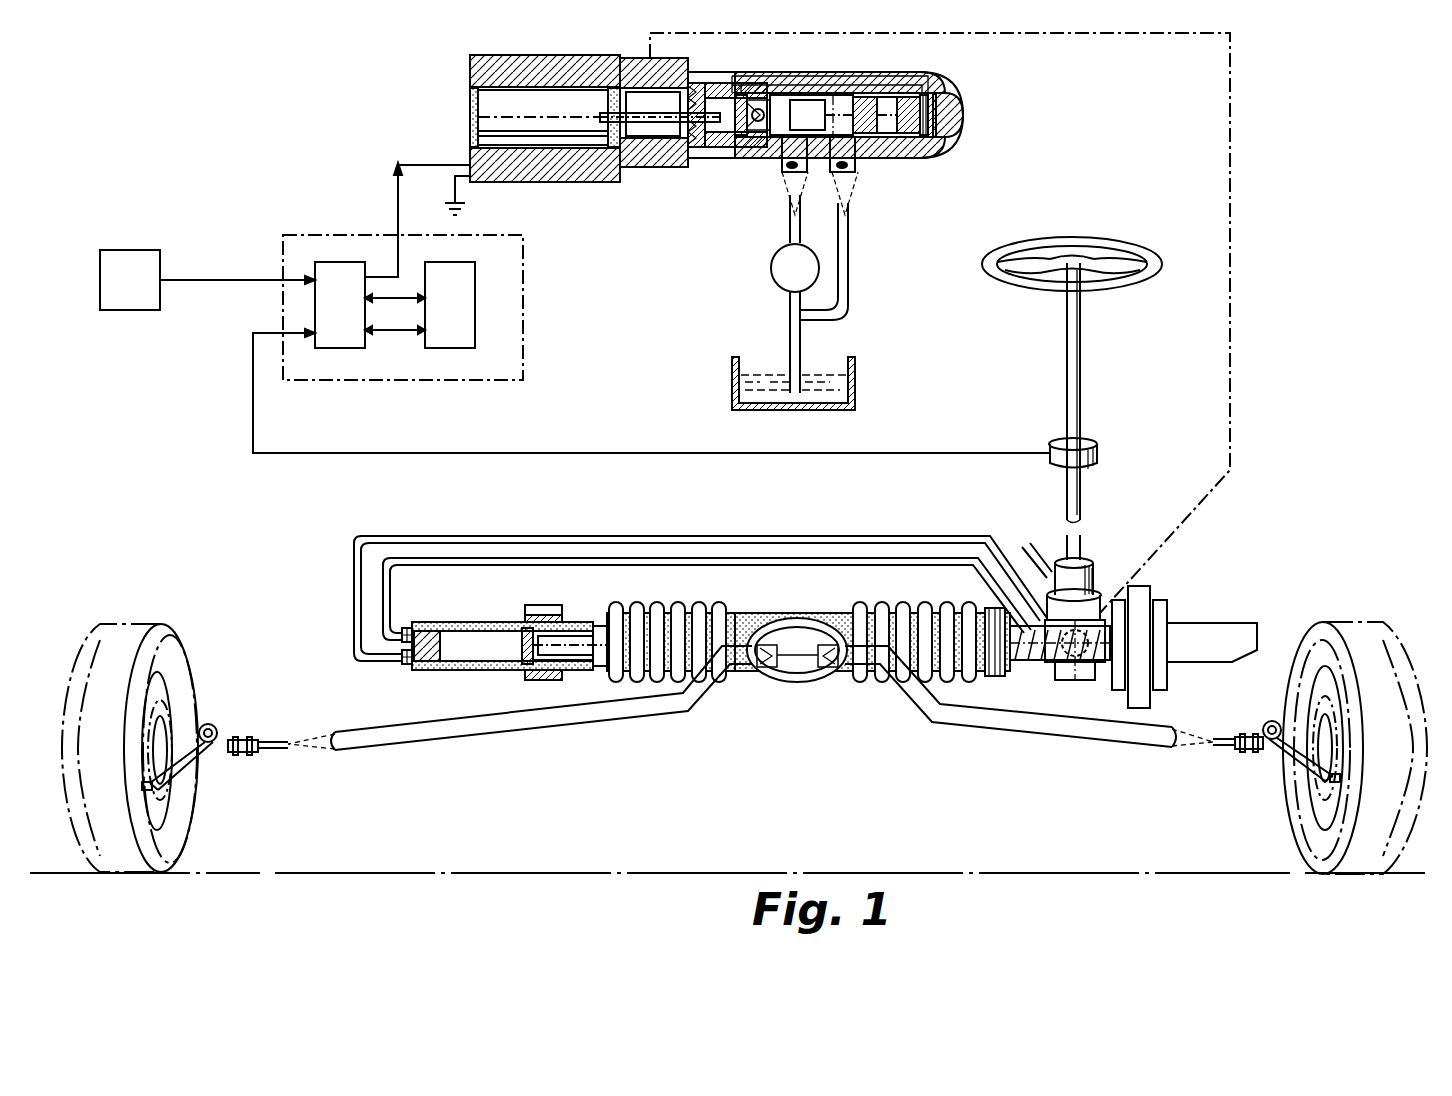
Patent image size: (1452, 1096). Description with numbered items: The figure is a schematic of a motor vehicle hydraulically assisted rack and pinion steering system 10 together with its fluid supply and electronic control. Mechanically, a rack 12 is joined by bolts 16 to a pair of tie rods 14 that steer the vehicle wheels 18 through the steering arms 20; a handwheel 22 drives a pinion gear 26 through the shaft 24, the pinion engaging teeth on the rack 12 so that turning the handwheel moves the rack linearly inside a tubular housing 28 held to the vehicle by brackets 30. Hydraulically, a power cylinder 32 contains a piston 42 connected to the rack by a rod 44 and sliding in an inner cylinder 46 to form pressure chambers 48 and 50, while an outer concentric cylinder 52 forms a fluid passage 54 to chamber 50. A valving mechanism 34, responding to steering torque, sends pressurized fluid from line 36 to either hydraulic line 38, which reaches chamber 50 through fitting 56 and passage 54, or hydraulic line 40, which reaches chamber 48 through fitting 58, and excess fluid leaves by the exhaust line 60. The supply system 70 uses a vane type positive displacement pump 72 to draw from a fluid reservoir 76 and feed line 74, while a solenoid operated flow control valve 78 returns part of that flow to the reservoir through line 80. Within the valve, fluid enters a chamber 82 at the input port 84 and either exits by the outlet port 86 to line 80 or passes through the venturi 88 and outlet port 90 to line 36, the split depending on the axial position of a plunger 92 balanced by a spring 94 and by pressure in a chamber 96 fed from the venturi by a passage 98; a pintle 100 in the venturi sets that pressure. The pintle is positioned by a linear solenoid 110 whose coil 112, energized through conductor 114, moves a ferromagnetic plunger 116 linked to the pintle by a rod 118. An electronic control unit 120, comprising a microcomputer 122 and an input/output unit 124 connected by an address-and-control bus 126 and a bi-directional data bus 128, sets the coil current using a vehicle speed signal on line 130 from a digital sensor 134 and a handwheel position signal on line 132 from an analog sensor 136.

The hydraulically assisted rack and pinion steering system 10 is at (738, 742).
The rack 12 is at (1020, 655).
The tie rods 14 is at (545, 722).
The bolts 16 is at (828, 665).
The vehicle wheels 18 is at (128, 636).
The steering arms 20 is at (196, 748).
The handwheel 22 is at (1113, 248).
The shaft 24 is at (1080, 330).
The pinion gear 26 is at (1083, 665).
The tubular housing 28 is at (1200, 630).
The brackets 30 is at (558, 610).
The power cylinder 32 is at (456, 643).
The valving mechanism 34 is at (1082, 575).
The line 36 is at (1195, 515).
The hydraulic line 38 is at (680, 538).
The hydraulic line 40 is at (820, 557).
The piston 42 is at (531, 627).
The rod 44 is at (592, 640).
The inner cylinder 46 is at (458, 632).
The pressure chamber 48 is at (500, 632).
The pressure chamber 50 is at (575, 658).
The outer concentric cylinder 52 is at (475, 670).
The fluid passage 54 is at (455, 671).
The fitting 56 is at (400, 656).
The fitting 58 is at (400, 645).
The hydraulic fluid exhaust line 60 is at (1032, 545).
The system for supplying a controlled flow of hydraulic fluid 70 is at (1020, 190).
The vane type positive displacement pump 72 is at (790, 280).
The line 74 is at (789, 232).
The fluid reservoir 76 is at (735, 372).
The solenoid operated flow control valve 78 is at (850, 127).
The line 80 is at (850, 300).
The chamber 82 is at (805, 105).
The input port 84 is at (782, 172).
The outlet port 86 is at (848, 175).
The venturi 88 is at (745, 93).
The outlet port 90 is at (652, 75).
The plunger 92 is at (832, 95).
The spring 94 is at (930, 112).
The chamber 96 is at (940, 122).
The passage 98 is at (860, 80).
The pintle 100 is at (720, 150).
The linear solenoid 110 is at (509, 132).
The coil 112 is at (550, 172).
The conductor 114 is at (397, 160).
The ferromagnetic plunger 116 is at (497, 102).
The rod 118 is at (648, 150).
The electronic control unit 120 is at (523, 340).
The microcomputer 122 is at (462, 348).
The input/output unit 124 is at (345, 348).
The address-and-control bus 126 is at (398, 350).
The bi-directional data bus 128 is at (396, 300).
The line 130 is at (232, 275).
The line 132 is at (253, 407).
The digital sensor 134 is at (128, 250).
The analog sensor 136 is at (1080, 456).